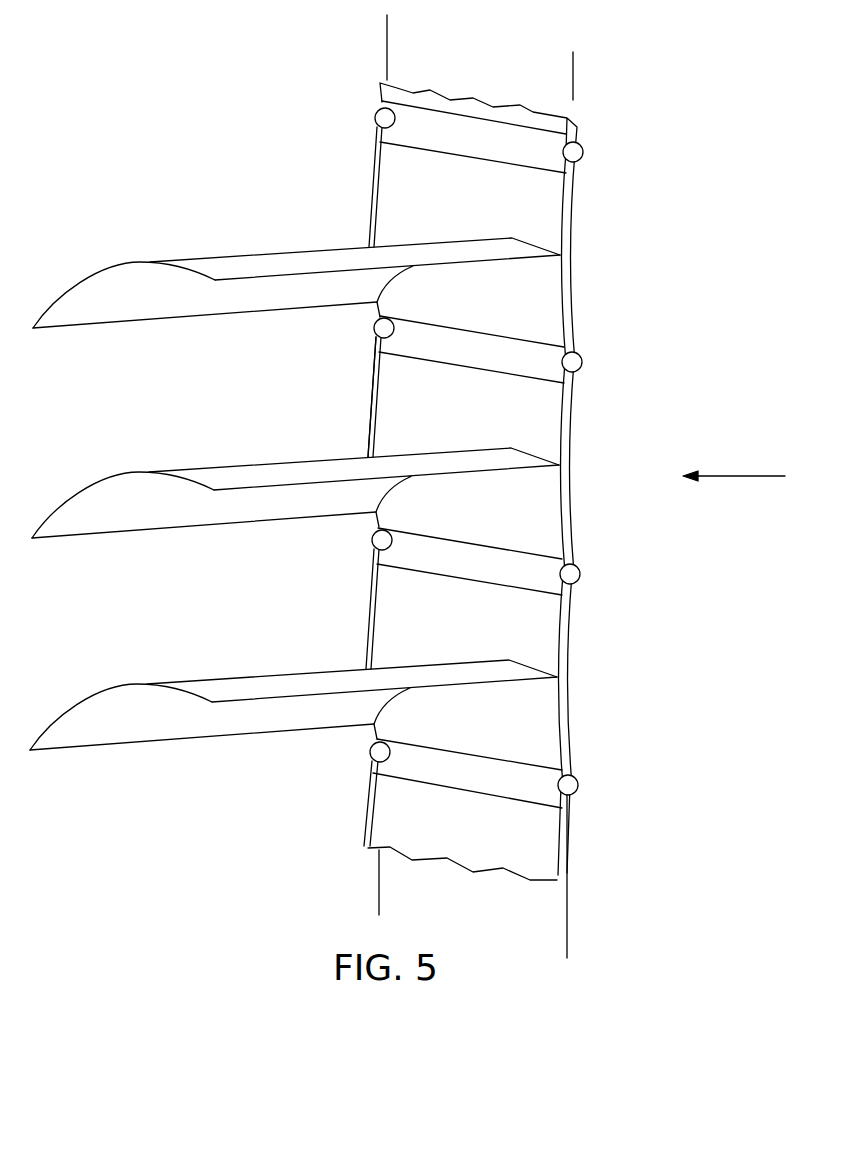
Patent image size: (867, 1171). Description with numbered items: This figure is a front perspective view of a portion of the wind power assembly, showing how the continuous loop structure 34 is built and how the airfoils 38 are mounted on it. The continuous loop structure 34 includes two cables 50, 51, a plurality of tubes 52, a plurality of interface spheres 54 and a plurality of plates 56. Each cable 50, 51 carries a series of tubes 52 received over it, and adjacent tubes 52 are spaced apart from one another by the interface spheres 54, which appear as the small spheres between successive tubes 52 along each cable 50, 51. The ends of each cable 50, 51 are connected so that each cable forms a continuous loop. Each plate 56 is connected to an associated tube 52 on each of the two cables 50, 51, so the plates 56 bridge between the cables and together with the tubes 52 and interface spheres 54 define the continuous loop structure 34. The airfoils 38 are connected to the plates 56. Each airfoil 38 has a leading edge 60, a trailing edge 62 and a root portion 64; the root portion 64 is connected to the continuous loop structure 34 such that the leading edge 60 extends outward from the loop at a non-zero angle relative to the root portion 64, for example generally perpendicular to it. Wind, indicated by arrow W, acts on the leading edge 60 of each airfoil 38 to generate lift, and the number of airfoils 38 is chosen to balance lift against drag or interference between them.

The continuous loop structure 34 is at (365, 436).
The airfoil 38 is at (102, 268).
The cable 50 is at (386, 59).
The cable 51 is at (575, 95).
The tube 52 is at (372, 192).
The interface sphere 54 is at (375, 118).
The plate 56 is at (553, 228).
The leading edge 60 is at (437, 266).
The trailing edge 62 is at (192, 318).
The root portion 64 is at (497, 238).
The wind W is at (737, 476).